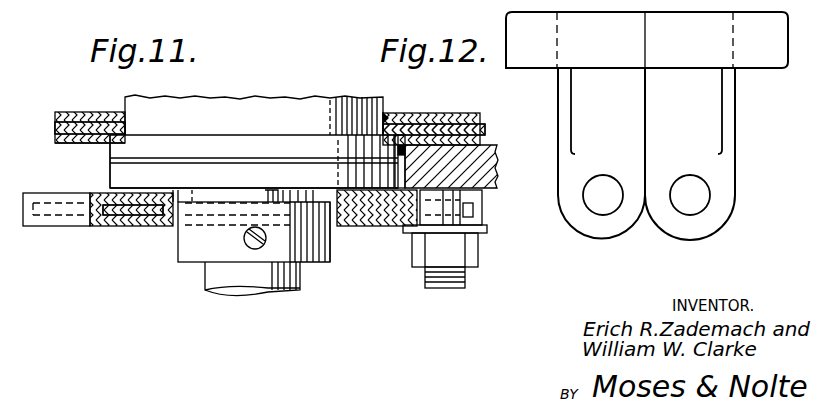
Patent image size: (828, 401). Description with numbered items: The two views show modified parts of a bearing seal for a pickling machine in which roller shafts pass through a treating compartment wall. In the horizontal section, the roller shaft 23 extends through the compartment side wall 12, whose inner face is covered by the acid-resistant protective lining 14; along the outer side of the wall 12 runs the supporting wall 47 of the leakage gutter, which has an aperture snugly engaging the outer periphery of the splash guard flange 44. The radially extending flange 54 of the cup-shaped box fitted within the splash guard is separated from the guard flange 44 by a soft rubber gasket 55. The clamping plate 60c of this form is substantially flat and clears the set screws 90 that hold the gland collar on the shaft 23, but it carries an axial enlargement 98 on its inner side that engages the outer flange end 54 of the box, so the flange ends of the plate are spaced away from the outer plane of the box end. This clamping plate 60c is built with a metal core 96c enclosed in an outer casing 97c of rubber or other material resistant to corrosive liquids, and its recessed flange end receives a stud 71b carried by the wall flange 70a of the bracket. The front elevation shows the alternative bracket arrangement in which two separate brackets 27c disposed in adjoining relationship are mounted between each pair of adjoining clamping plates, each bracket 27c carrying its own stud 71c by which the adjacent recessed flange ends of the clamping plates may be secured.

In FIG. 11, the side wall 12 is at (55, 128).
In FIG. 11, the protective lining 14 is at (81, 112).
In FIG. 11, the supporting wall 47 is at (63, 146).
In FIG. 11, the flange 44 is at (241, 141).
In FIG. 11, the soft rubber gasket 55 is at (143, 161).
In FIG. 11, the flange 54 is at (112, 172).
In FIG. 11, the axial enlargement 98 is at (148, 191).
In FIG. 11, the wall flange 70a is at (497, 171).
In FIG. 11, the outer casing 97c is at (58, 229).
In FIG. 11, the metal core 96c is at (136, 228).
In FIG. 11, the clamping plate 60c is at (110, 230).
In FIG. 11, the set screw 90 is at (244, 236).
In FIG. 11, the roller shaft 23 is at (235, 283).
In FIG. 11, the stud 71b is at (445, 256).
In FIG. 12, the bracket 27c is at (558, 99).
In FIG. 12, the stud 71c is at (603, 180).